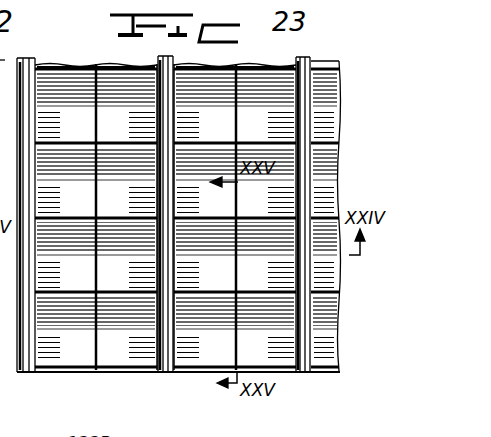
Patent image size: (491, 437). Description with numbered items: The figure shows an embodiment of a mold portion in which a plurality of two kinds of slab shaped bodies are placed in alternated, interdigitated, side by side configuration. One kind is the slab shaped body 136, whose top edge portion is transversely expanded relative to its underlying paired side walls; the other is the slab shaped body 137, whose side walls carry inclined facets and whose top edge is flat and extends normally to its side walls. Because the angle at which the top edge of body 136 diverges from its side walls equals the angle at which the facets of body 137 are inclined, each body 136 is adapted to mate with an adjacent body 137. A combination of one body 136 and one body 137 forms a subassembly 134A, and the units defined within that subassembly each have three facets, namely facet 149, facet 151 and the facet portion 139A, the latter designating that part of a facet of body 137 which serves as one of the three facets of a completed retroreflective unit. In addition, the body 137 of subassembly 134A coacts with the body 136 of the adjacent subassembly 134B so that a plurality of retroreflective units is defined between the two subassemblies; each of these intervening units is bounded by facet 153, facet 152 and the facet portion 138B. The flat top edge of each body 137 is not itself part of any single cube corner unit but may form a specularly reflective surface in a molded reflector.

The slab shaped body 136 is at (78, 62).
The slab shaped body 137 is at (37, 56).
The subassembly 134A is at (102, 248).
The subassembly 134B is at (243, 248).
The facet 149 is at (126, 363).
The facet 151 is at (126, 315).
The facet 152 is at (216, 363).
The facet 153 is at (216, 316).
The facet portion 139A is at (137, 231).
The facet portion 138B is at (197, 231).